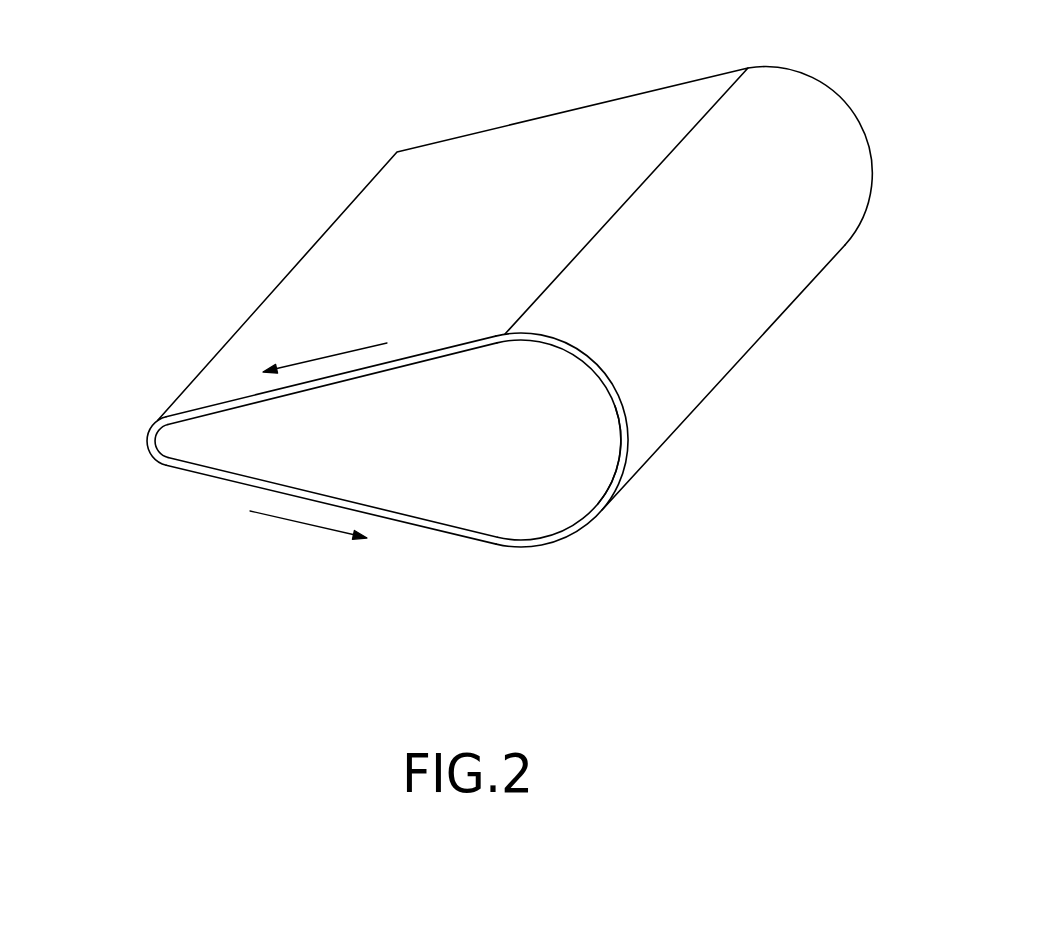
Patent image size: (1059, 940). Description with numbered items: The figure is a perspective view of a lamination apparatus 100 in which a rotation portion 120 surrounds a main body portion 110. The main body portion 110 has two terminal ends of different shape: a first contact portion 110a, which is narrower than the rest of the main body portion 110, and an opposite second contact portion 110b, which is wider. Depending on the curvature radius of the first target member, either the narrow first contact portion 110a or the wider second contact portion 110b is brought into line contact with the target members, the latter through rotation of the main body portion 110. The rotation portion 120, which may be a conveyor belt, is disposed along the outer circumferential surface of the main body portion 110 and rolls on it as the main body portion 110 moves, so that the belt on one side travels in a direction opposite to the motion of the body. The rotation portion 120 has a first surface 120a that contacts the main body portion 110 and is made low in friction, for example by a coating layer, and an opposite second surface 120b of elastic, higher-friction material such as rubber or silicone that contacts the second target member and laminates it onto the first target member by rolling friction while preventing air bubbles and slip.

The lamination apparatus 100 is at (333, 75).
The main body portion 110 is at (389, 500).
The first contact portion 110a is at (150, 446).
The second contact portion 110b is at (621, 469).
The rotation portion 120 is at (455, 429).
The first surface 120a is at (592, 398).
The second surface 120b is at (613, 360).